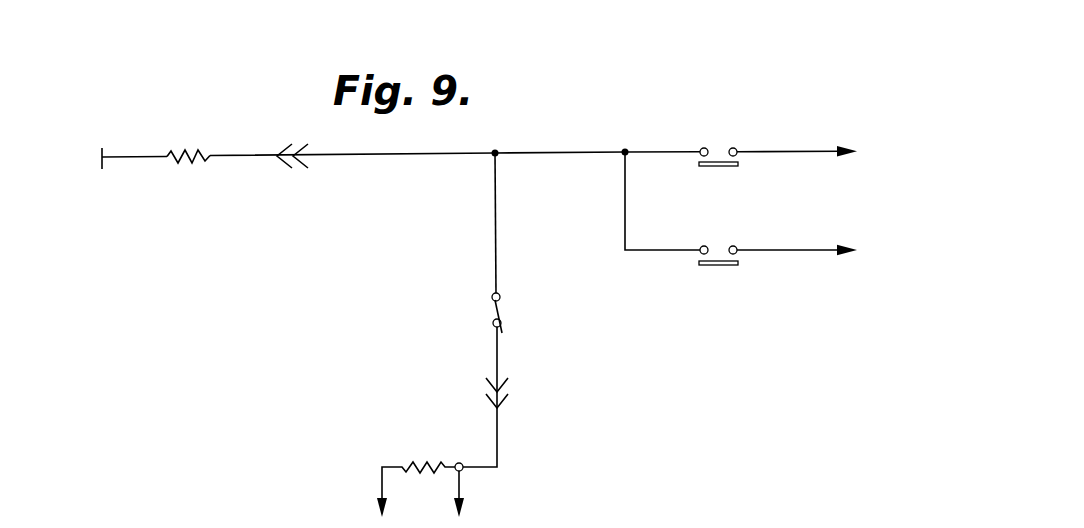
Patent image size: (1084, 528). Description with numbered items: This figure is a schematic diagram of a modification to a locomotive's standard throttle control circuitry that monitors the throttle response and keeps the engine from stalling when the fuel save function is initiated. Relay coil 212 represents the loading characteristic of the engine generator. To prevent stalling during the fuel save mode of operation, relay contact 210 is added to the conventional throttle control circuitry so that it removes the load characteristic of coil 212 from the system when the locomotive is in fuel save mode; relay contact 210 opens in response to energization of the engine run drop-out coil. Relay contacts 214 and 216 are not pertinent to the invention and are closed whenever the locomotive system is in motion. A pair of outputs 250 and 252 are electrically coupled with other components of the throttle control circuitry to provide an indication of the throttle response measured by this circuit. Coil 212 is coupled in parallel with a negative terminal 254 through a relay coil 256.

The relay contact 210 is at (500, 313).
The relay coil 212 is at (436, 462).
The relay contact 214 is at (723, 167).
The relay contact 216 is at (726, 266).
The output 250 is at (845, 145).
The output 252 is at (845, 243).
The negative terminal 254 is at (104, 156).
The relay coil 256 is at (193, 163).